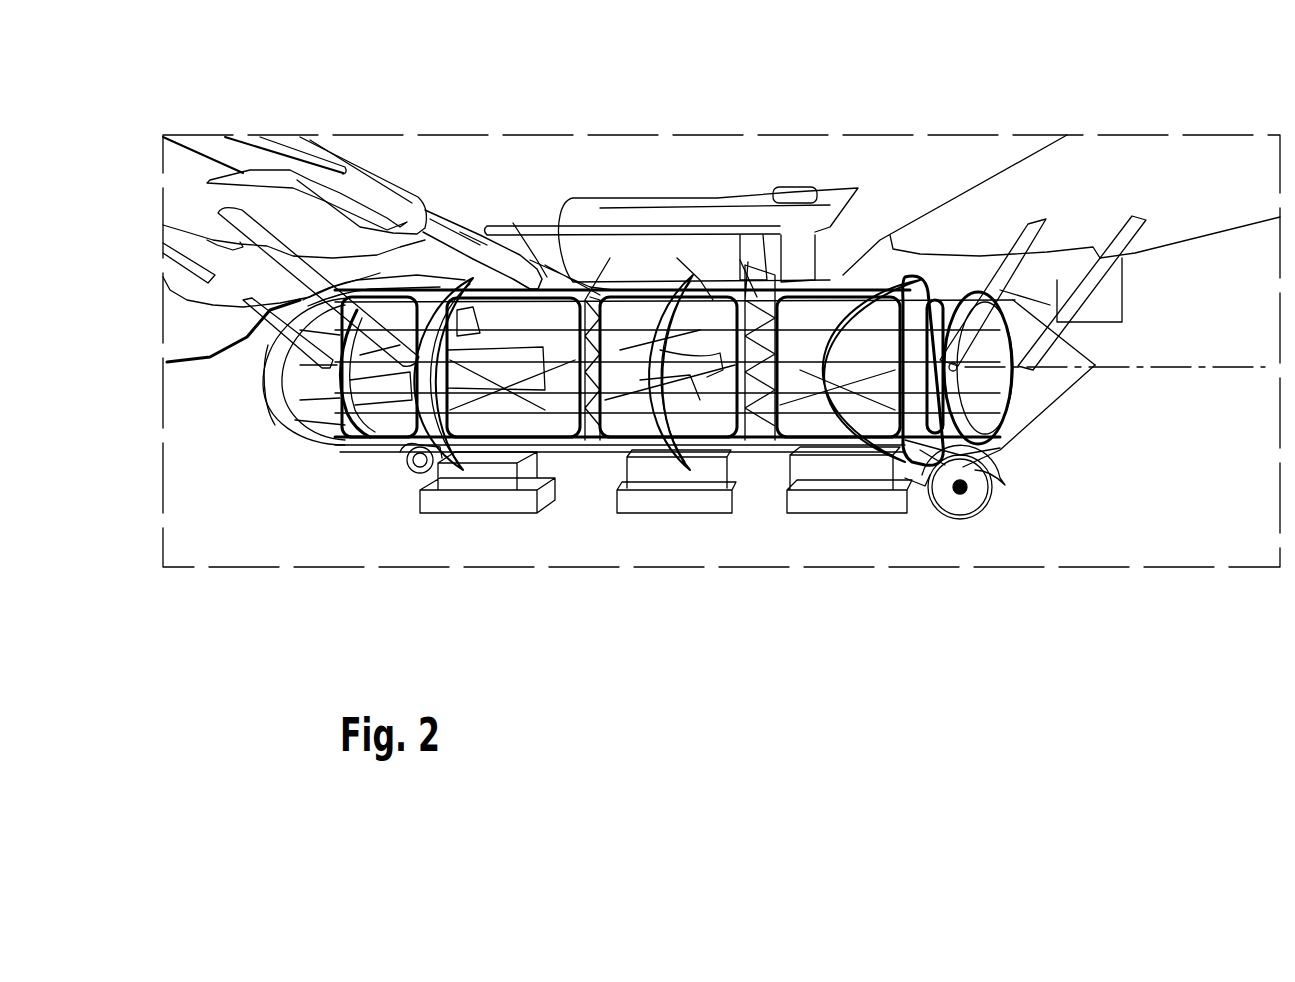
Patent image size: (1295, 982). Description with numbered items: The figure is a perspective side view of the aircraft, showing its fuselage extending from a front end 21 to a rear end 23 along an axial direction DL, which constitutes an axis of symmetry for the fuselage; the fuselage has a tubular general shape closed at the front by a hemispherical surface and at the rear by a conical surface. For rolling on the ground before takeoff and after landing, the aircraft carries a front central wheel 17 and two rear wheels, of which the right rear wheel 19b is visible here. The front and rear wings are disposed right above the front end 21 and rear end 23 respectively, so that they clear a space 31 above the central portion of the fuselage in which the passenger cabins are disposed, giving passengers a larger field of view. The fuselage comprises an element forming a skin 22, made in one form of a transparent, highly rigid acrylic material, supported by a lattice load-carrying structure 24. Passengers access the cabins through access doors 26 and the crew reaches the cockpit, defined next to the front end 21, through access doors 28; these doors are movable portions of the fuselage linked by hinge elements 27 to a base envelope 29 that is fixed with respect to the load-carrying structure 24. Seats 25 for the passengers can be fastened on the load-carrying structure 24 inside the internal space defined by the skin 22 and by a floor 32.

The space 31 is at (806, 88).
The front end 21 is at (263, 391).
The lattice load-carrying structure 24 is at (310, 418).
The access doors 28 is at (375, 415).
The front central wheel 17 is at (413, 472).
The seats 25 is at (543, 382).
The access doors 26 is at (718, 400).
The base envelope 29 is at (760, 452).
The hinge elements 27 is at (858, 430).
The right rear wheel 19b is at (963, 523).
The floor 32 is at (1010, 450).
The element forming a skin 22 is at (1060, 350).
The rear end 23 is at (1068, 398).
The axial direction DL is at (1222, 367).